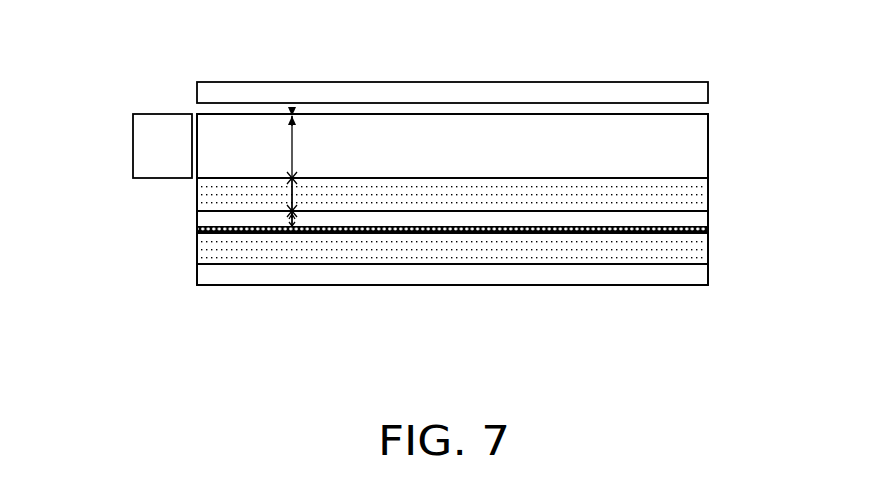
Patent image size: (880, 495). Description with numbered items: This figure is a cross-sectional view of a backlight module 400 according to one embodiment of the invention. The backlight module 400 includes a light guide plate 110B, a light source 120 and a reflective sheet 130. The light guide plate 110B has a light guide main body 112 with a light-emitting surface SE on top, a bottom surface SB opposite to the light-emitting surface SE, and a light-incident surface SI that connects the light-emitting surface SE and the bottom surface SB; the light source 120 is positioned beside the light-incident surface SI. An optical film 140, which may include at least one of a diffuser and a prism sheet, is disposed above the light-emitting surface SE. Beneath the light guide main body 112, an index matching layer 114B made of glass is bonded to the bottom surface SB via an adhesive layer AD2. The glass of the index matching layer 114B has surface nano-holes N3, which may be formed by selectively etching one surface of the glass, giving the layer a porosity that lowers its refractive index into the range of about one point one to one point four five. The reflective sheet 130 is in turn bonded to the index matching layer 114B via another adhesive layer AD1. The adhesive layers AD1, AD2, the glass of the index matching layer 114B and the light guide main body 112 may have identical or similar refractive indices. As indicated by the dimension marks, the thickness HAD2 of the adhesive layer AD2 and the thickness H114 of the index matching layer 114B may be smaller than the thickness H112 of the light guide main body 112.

The backlight module 400 is at (451, 196).
The optical film 140 is at (703, 94).
The light guide plate 110B is at (526, 173).
The light guide main body 112 is at (703, 143).
The adhesive layer AD2 is at (703, 197).
The index matching layer 114B is at (713, 210).
The adhesive layer AD1 is at (703, 251).
The reflective sheet 130 is at (703, 278).
The light source 120 is at (148, 146).
The light-incident surface SI is at (194, 148).
The light-emitting surface SE is at (228, 111).
The thickness of the light guide main body H112 is at (293, 151).
The bottom surface SB is at (233, 181).
The thickness of the index matching layer H114 is at (290, 222).
The thickness of the adhesive layer HAD2 is at (292, 194).
The surface nano-holes N3 is at (647, 236).